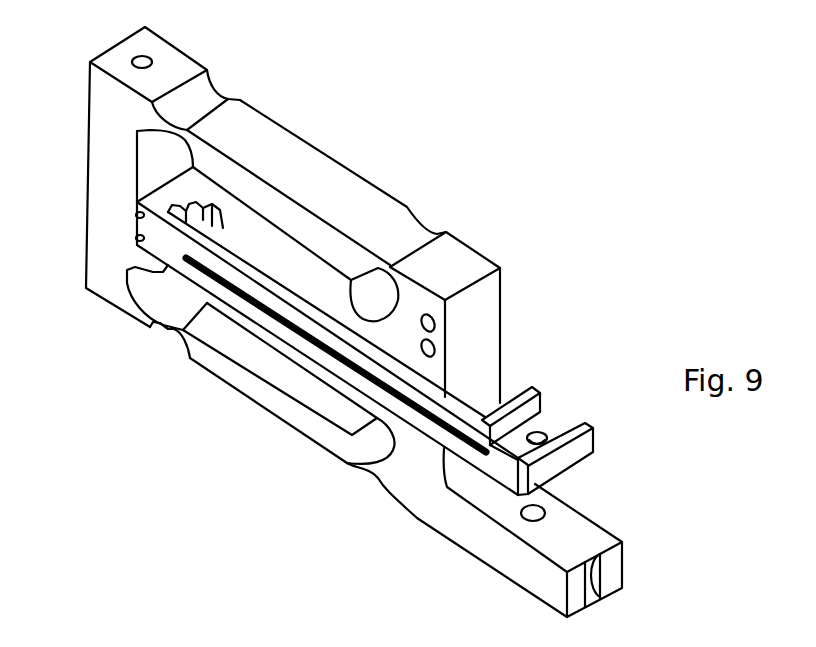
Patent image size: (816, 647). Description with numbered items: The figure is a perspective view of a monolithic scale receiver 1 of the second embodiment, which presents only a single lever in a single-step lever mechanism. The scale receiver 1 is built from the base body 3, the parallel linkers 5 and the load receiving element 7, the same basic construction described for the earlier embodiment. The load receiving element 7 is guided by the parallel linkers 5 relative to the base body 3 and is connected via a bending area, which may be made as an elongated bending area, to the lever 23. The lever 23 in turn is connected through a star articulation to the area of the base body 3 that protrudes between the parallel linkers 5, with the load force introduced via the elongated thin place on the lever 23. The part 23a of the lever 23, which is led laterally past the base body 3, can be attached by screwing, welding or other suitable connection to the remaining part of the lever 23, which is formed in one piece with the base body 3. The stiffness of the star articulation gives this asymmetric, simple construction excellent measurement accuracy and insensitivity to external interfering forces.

The scale receiver 1 is at (437, 170).
The base body 3 is at (488, 550).
The parallel linkers 5 is at (305, 142).
The load receiving element 7 is at (176, 62).
The lever 23 is at (153, 192).
The part of the lever 23a is at (163, 245).